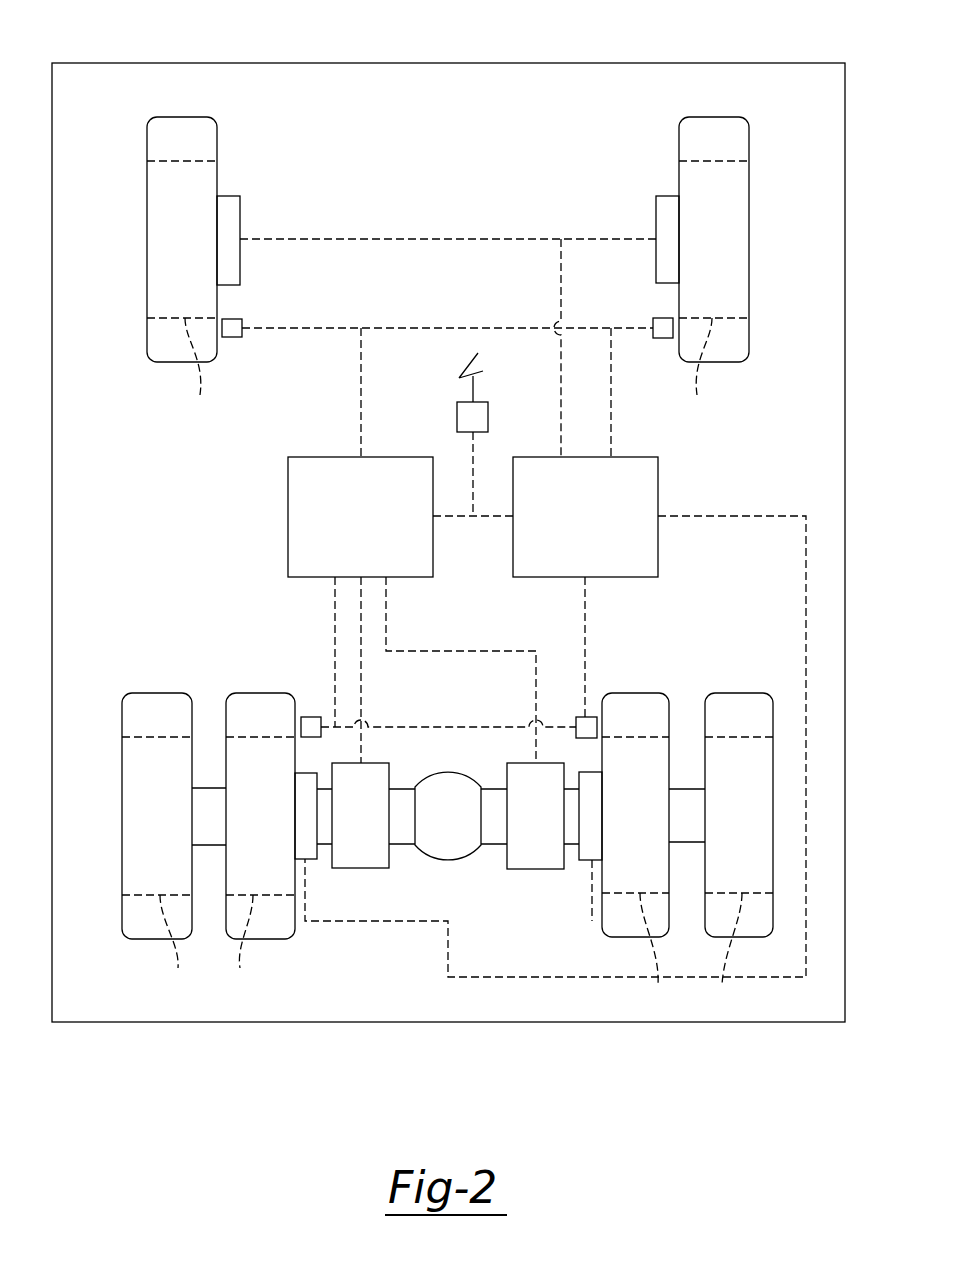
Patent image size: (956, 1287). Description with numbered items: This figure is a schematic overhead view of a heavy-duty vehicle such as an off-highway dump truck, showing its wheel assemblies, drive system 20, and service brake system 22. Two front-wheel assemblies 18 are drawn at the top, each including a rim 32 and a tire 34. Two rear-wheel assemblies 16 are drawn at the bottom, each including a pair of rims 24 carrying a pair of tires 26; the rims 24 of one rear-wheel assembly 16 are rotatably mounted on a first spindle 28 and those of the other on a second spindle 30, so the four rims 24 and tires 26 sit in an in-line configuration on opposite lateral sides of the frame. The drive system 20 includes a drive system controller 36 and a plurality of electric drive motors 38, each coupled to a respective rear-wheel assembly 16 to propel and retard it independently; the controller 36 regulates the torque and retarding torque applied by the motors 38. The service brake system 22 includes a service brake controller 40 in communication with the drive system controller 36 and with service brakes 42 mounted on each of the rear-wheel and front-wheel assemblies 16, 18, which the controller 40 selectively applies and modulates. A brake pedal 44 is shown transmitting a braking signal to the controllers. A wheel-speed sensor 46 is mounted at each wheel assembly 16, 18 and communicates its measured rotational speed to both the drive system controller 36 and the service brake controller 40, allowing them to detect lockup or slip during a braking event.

The rear-wheel assembly 16 is at (145, 693).
The front-wheel assembly 18 is at (177, 117).
The drive system 20 is at (257, 500).
The service brake system 22 is at (668, 483).
The rim 24 is at (447, 879).
The tire 26 is at (148, 939).
The first spindle 28 is at (688, 842).
The second spindle 30 is at (205, 845).
The rim 32 is at (448, 293).
The tire 34 is at (174, 362).
The drive system controller 36 is at (317, 457).
The electric drive motor 38 is at (358, 868).
The service brake controller 40 is at (580, 457).
The service brake 42 is at (228, 196).
The brake pedal 44 is at (457, 418).
The wheel-speed sensor 46 is at (232, 338).